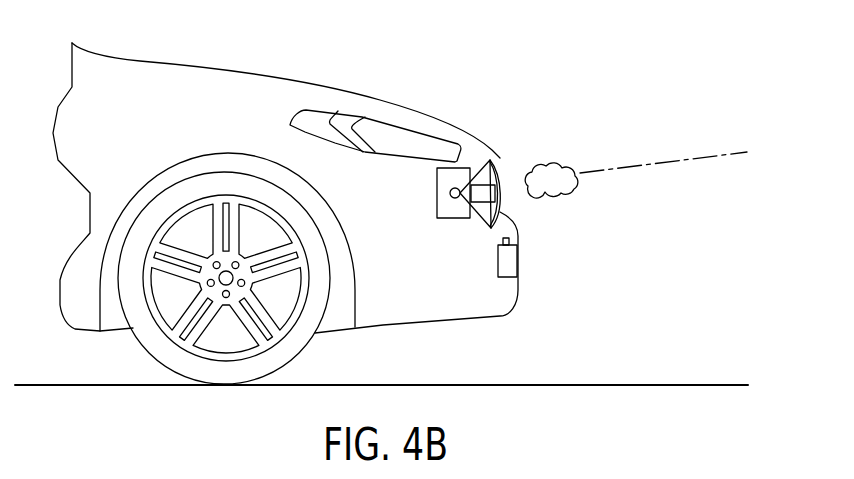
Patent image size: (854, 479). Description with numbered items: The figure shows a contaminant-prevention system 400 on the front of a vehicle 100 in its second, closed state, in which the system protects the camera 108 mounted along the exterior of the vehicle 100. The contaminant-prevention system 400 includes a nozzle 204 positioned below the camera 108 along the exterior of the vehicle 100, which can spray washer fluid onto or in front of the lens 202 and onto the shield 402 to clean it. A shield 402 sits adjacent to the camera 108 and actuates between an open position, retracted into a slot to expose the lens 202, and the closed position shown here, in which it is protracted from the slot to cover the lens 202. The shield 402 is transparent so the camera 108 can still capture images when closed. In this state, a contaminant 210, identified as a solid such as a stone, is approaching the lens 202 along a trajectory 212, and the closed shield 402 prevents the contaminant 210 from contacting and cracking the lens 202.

The vehicle 100 is at (173, 45).
The camera 108 is at (450, 218).
The lens 202 is at (500, 218).
The nozzle 204 is at (518, 262).
The contaminant 210 is at (562, 170).
The trajectory 212 is at (693, 159).
The contaminant-prevention system 400 is at (510, 177).
The shield 402 is at (499, 164).